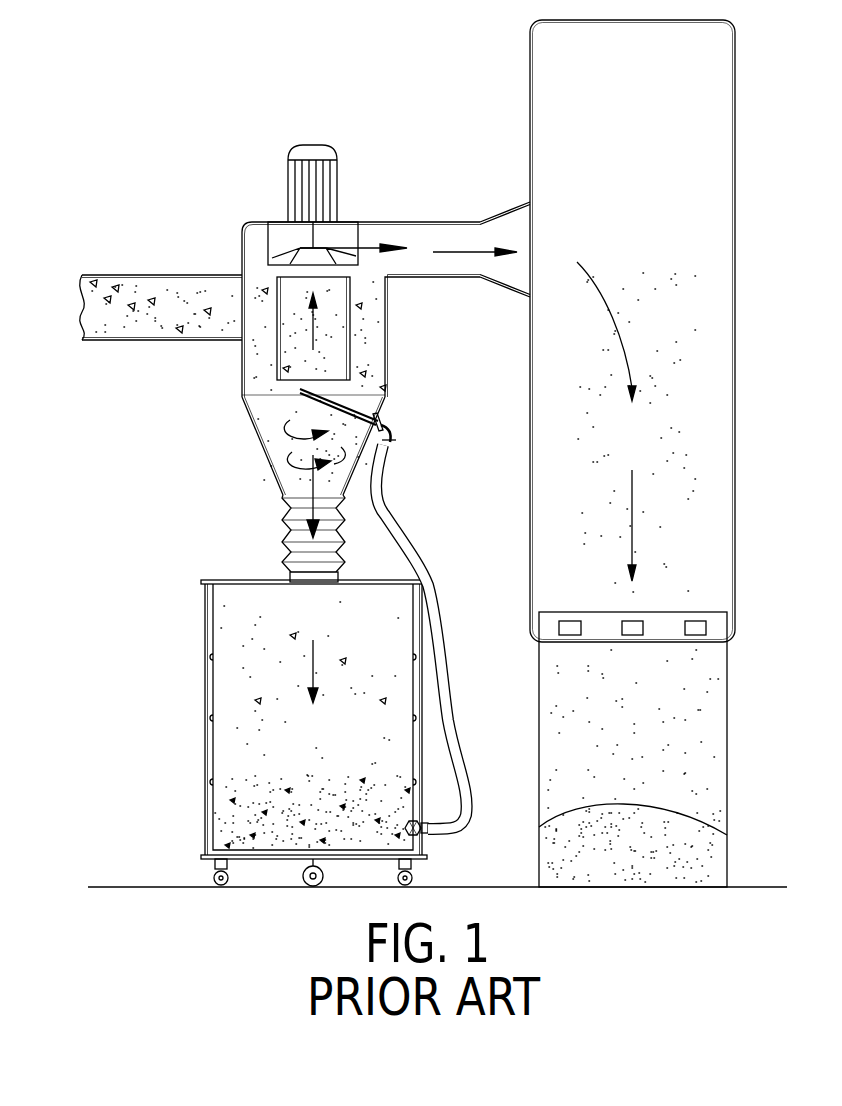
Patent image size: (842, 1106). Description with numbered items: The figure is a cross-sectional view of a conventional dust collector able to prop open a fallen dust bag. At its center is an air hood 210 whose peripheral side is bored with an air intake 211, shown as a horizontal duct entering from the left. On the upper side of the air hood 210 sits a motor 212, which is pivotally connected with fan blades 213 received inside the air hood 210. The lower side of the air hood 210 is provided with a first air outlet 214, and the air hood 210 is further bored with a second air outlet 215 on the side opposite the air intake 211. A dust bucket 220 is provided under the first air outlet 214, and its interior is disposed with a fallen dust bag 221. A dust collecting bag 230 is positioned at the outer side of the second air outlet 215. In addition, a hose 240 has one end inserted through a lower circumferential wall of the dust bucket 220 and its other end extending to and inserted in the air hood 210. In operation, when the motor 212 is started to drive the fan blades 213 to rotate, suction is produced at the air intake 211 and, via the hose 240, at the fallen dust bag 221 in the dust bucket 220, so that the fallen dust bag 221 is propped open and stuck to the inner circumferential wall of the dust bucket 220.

The air hood 210 is at (242, 358).
The air intake 211 is at (142, 305).
The motor 212 is at (290, 187).
The fan blades 213 is at (345, 223).
The first air outlet 214 is at (312, 562).
The second air outlet 215 is at (520, 227).
The dust bucket 220 is at (207, 758).
The fallen dust bag 221 is at (212, 697).
The dust collecting bag 230 is at (555, 710).
The hose 240 is at (410, 533).